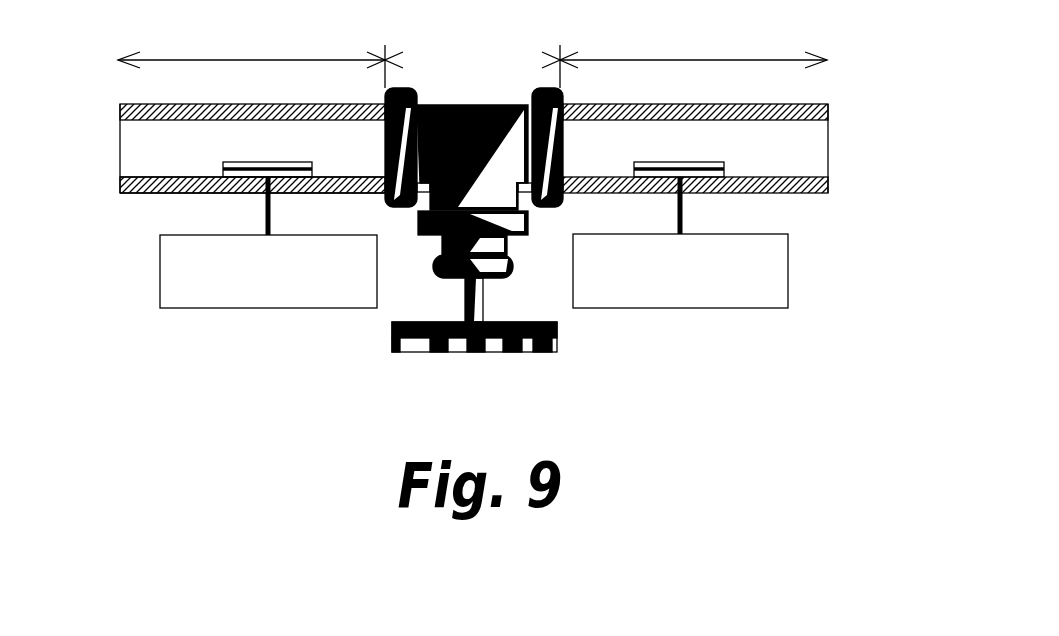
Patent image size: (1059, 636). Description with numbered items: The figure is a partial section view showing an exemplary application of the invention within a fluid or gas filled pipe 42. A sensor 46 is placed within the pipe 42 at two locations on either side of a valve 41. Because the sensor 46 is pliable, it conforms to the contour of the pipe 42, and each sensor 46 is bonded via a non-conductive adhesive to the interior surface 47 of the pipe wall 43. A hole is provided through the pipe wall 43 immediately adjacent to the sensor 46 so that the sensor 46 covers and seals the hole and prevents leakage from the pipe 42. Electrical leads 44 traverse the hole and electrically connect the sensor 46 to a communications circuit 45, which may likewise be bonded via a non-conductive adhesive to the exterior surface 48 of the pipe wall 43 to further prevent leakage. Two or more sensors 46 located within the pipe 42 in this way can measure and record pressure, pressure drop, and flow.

The valve 41 is at (474, 192).
The pipe 42 is at (472, 60).
The pipe wall 43 is at (118, 183).
The electrical leads 44 is at (476, 230).
The communications circuit 45 is at (474, 283).
The sensor 46 is at (462, 137).
The interior surface 47 is at (153, 175).
The exterior surface 48 is at (147, 193).